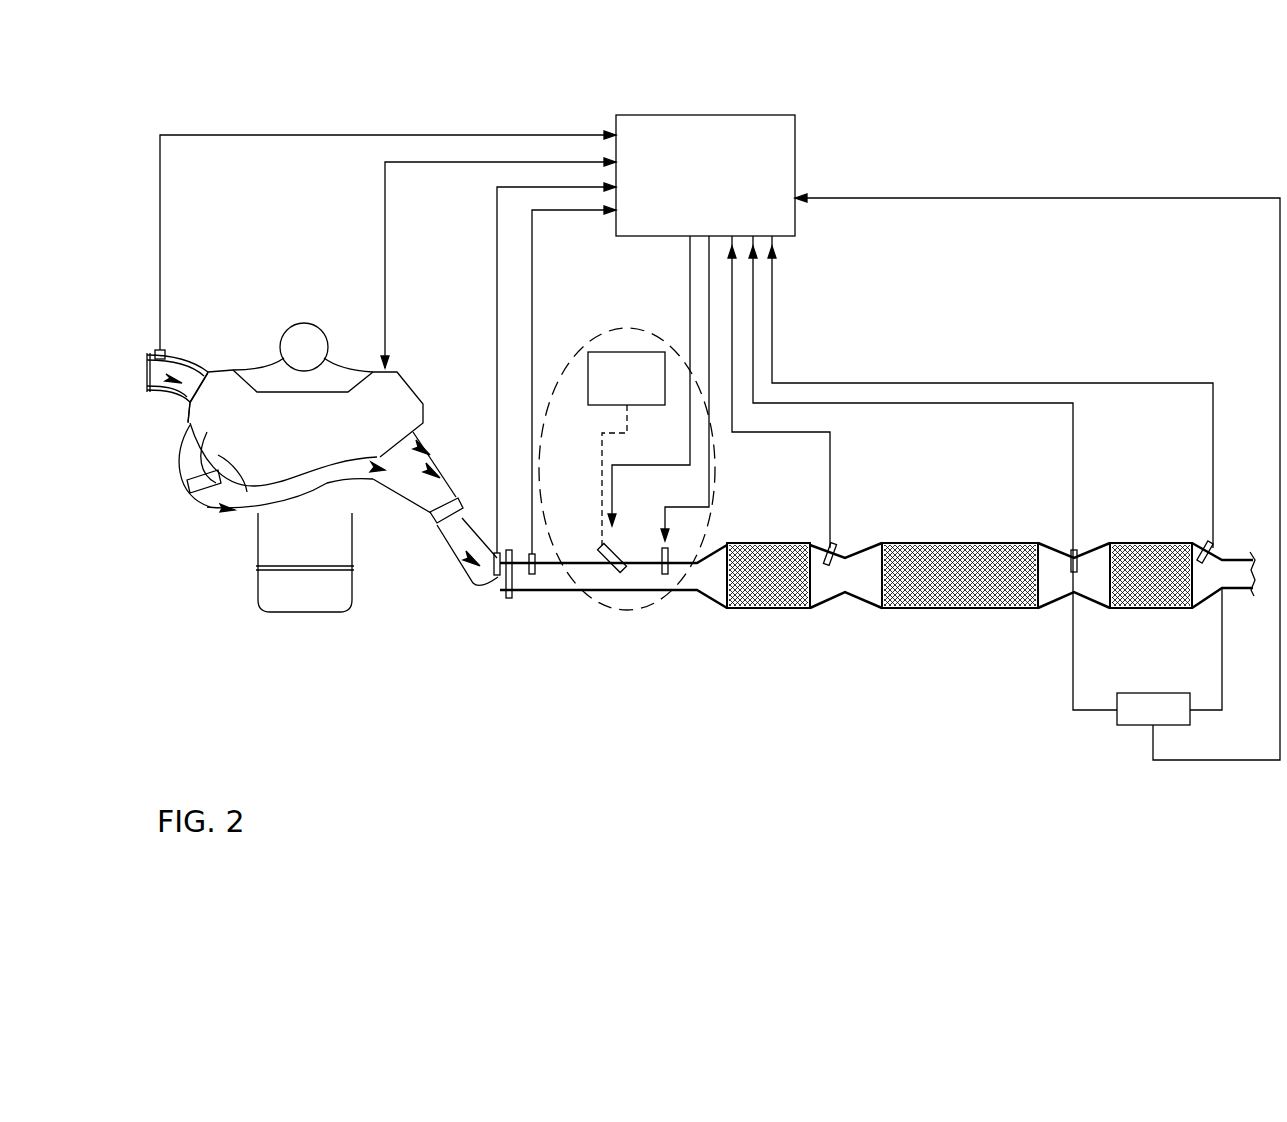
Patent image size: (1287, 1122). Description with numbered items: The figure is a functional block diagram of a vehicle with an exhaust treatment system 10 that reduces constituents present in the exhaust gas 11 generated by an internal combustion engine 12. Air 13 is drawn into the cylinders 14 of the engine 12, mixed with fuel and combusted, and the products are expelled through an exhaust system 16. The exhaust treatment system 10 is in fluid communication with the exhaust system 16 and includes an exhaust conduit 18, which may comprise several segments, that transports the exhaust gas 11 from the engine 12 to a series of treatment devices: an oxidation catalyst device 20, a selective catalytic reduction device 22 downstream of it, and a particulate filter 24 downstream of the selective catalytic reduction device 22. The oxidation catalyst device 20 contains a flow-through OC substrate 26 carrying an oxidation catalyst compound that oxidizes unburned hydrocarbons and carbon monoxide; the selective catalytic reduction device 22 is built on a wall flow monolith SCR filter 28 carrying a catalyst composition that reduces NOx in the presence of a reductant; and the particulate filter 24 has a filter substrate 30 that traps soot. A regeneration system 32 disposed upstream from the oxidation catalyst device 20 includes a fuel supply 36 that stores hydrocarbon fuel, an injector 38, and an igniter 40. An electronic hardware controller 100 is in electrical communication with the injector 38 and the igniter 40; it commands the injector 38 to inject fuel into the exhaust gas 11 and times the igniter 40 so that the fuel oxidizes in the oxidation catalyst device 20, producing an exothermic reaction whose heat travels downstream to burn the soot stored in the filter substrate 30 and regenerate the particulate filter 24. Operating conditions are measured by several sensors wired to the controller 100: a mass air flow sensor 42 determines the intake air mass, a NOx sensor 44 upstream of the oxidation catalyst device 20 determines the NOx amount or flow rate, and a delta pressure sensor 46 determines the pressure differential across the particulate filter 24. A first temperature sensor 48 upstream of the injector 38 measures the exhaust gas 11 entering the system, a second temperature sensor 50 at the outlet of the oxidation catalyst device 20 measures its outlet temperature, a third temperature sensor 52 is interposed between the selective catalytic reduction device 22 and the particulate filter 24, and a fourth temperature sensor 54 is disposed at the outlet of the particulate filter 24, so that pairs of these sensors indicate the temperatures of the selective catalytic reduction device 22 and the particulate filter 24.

The exhaust treatment system 10 is at (570, 686).
The exhaust gas 11 is at (367, 468).
The internal combustion engine 12 is at (396, 368).
The air 13 is at (148, 385).
The cylinders 14 is at (190, 428).
The exhaust system 16 is at (438, 466).
The exhaust conduit 18 is at (198, 518).
The oxidation catalyst device 20 is at (743, 620).
The selective catalytic reduction device 22 is at (928, 614).
The particulate filter 24 is at (1153, 619).
The OC substrate 26 is at (758, 545).
The SCR filter 28 is at (945, 543).
The filter substrate 30 is at (1158, 545).
The regeneration system 32 is at (578, 350).
The fuel supply 36 is at (614, 393).
The injector 38 is at (606, 575).
The igniter 40 is at (668, 548).
The mass air flow sensor 42 is at (157, 352).
The NOx sensor 44 is at (494, 578).
The pressure sensor 46 is at (1117, 727).
The first temperature sensor 48 is at (508, 602).
The second temperature sensor 50 is at (835, 548).
The third temperature sensor 52 is at (1071, 548).
The fourth temperature sensor 54 is at (1205, 546).
The electronic hardware controller 100 is at (685, 186).